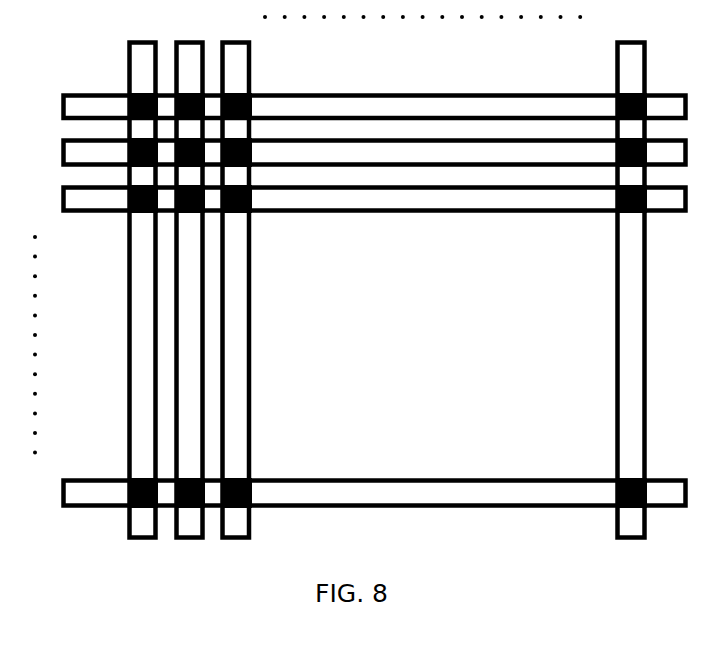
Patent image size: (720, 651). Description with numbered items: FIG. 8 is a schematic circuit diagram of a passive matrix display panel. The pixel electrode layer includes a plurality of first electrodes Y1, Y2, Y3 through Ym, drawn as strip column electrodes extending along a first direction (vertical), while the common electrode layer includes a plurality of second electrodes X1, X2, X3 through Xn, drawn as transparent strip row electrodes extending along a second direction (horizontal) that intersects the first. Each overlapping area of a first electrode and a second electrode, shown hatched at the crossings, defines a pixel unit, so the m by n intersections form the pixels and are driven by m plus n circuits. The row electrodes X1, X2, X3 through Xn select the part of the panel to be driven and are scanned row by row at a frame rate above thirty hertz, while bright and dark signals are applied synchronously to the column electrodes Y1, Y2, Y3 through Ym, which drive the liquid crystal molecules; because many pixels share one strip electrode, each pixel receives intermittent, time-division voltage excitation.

The second electrode X1 is at (353, 109).
The second electrode X2 is at (353, 155).
The second electrode X3 is at (353, 202).
The second electrode Xn is at (353, 491).
The first electrode Y1 is at (141, 271).
The first electrode Y2 is at (187, 271).
The first electrode Y3 is at (233, 271).
The first electrode Ym is at (625, 271).